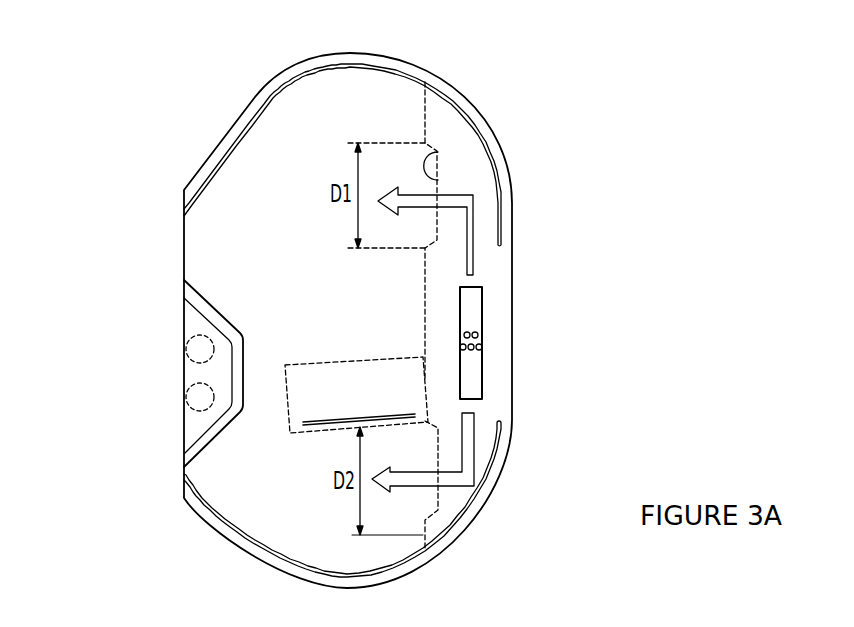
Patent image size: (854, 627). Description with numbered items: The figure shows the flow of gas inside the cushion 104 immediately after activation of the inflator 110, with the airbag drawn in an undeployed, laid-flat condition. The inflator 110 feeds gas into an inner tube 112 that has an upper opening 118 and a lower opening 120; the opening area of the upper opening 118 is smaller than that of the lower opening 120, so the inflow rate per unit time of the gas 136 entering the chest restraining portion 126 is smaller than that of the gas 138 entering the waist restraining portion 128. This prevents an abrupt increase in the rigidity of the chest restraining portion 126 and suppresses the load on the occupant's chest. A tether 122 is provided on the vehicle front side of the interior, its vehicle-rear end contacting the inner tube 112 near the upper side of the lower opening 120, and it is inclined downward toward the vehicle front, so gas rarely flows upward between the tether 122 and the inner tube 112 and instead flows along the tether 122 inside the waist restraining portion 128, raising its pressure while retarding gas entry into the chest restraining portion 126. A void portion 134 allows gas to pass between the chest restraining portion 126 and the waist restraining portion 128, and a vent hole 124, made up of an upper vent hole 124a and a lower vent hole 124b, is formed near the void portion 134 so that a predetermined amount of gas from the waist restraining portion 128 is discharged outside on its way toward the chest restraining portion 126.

The cushion 104 is at (196, 94).
The inflator 110 is at (477, 318).
The inner tube 112 is at (425, 118).
The upper opening 118 is at (438, 153).
The lower opening 120 is at (437, 508).
The tether 122 is at (342, 363).
The vent hole 124 is at (127, 373).
The vent hole 124a is at (197, 351).
The vent hole 124b is at (187, 398).
The chest restraining portion 126 is at (228, 173).
The waist restraining portion 128 is at (315, 543).
The void portion 134 is at (243, 432).
The gas 136 is at (475, 206).
The gas 138 is at (475, 452).